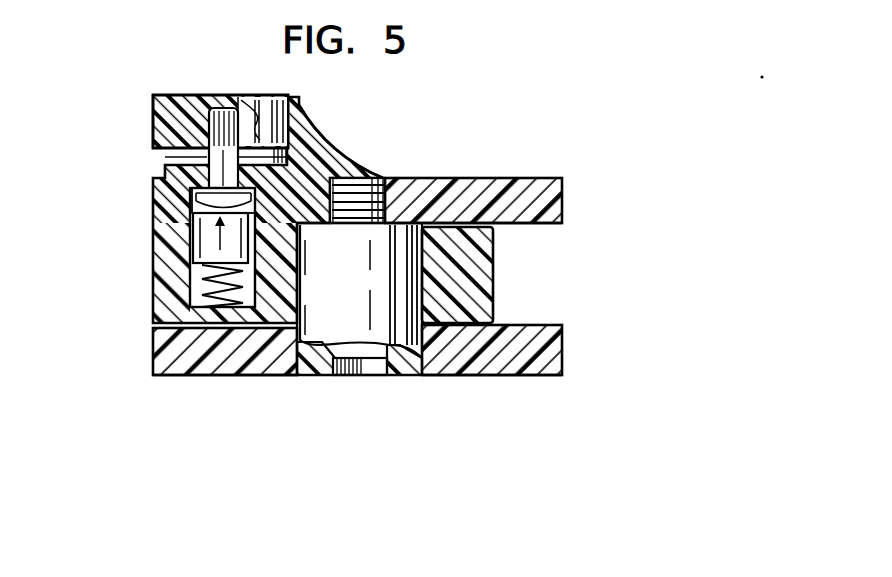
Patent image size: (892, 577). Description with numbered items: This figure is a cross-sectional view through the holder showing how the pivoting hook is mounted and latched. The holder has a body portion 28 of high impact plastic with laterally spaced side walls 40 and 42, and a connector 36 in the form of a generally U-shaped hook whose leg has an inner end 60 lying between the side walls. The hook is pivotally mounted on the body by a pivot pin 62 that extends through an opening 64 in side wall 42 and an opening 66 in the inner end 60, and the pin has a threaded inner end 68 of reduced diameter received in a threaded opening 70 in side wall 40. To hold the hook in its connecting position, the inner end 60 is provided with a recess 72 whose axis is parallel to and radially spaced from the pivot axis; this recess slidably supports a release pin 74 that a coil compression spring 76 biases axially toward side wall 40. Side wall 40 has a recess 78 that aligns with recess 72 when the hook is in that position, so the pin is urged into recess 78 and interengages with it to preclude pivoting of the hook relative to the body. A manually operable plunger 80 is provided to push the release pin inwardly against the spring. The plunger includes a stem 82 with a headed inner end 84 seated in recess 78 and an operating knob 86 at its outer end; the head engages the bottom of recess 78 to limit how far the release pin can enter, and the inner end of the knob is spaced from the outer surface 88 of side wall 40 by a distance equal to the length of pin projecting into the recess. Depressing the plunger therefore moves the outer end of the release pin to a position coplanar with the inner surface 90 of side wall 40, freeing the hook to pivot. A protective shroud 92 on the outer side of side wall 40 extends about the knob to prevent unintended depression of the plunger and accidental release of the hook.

The body portion 28 is at (180, 384).
The connector 36 is at (148, 250).
The side wall 40 is at (485, 182).
The side wall 42 is at (520, 362).
The inner end 60 is at (483, 270).
The pivot pin 62 is at (403, 365).
The opening 64 is at (310, 377).
The opening 66 is at (297, 300).
The threaded inner end 68 is at (345, 188).
The threaded opening 70 is at (376, 176).
The recess 72 is at (180, 319).
The release pin 74 is at (197, 250).
The coil compression spring 76 is at (212, 285).
The recess 78 is at (190, 209).
The plunger 80 is at (160, 86).
The stem 82 is at (214, 155).
The headed inner end 84 is at (196, 193).
The operating knob 86 is at (165, 112).
The outer surface 88 is at (262, 170).
The inner surface 90 is at (300, 249).
The protective shroud 92 is at (313, 134).